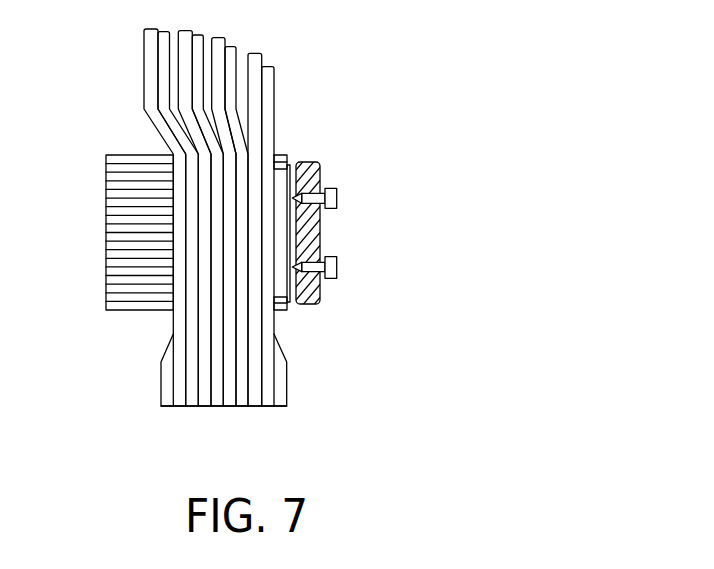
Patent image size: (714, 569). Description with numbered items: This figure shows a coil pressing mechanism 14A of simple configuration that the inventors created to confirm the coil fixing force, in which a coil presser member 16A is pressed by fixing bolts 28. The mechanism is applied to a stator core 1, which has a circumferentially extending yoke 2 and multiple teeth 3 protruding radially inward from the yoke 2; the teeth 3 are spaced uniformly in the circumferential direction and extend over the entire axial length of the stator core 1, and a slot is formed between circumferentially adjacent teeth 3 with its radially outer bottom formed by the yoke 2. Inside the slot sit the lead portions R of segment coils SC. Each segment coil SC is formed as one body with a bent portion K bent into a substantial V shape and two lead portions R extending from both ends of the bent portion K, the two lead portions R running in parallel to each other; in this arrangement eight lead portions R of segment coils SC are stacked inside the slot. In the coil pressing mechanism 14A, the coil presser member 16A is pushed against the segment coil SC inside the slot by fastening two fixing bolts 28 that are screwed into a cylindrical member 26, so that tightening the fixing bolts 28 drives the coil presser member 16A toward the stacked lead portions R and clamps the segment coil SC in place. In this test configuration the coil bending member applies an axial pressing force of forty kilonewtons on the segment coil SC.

The stator core 1 is at (103, 153).
The yoke 2 is at (115, 238).
The teeth 3 is at (281, 311).
The lead portions R is at (159, 132).
The bent portion K is at (205, 400).
The segment coil SC is at (230, 407).
The coil pressing mechanism 14A is at (337, 165).
The coil presser member 16A is at (289, 165).
The cylindrical member 26 is at (311, 307).
The fixing bolts 28 is at (338, 198).